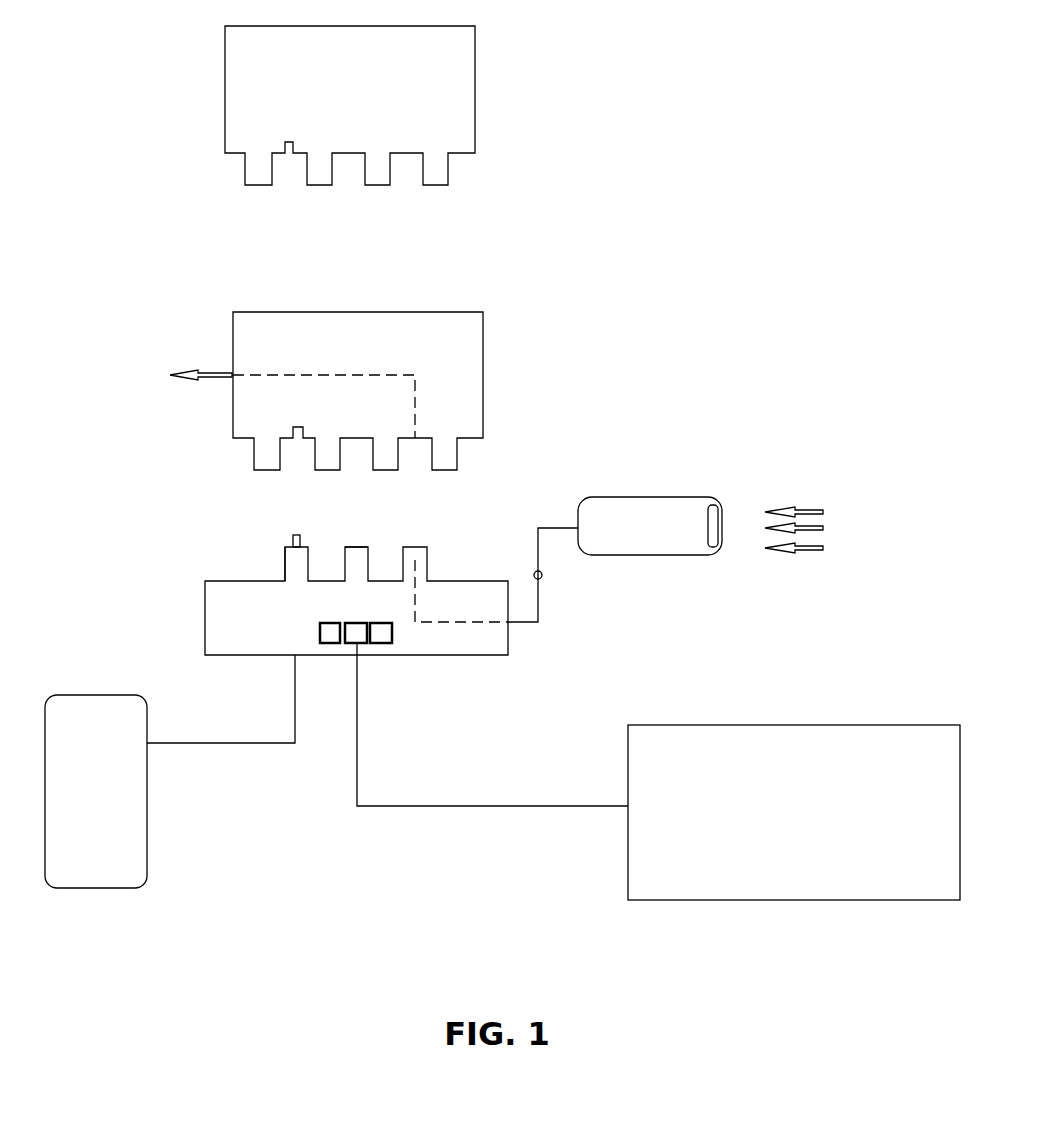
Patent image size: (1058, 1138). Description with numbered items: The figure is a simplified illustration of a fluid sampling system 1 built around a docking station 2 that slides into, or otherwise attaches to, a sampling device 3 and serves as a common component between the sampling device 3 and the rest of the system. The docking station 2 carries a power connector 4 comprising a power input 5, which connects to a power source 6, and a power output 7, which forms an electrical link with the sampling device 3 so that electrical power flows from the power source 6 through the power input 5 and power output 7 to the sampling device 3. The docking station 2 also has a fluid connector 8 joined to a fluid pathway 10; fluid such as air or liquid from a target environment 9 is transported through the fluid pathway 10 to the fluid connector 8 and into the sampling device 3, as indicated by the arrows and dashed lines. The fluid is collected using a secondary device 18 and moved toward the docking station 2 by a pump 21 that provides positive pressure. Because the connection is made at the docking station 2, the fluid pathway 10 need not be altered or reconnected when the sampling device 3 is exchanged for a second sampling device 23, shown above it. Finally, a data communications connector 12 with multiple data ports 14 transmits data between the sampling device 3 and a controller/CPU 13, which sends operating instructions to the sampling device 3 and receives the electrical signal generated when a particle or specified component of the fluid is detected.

The fluid sampling system 1 is at (616, 382).
The docking station 2 is at (233, 635).
The sampling device 3 is at (350, 344).
The power connector 4 is at (287, 558).
The power input 5 is at (293, 656).
The power source 6 is at (85, 795).
The power output 7 is at (295, 537).
The fluid connector 8 is at (422, 553).
The target environment 9 is at (856, 535).
The fluid pathway 10 is at (542, 613).
The data communications connector 12 is at (360, 555).
The controller/CPU 13 is at (779, 815).
The data ports 14 is at (358, 637).
The secondary device 18 is at (634, 536).
The pump 21 is at (542, 575).
The second sampling device 23 is at (337, 87).